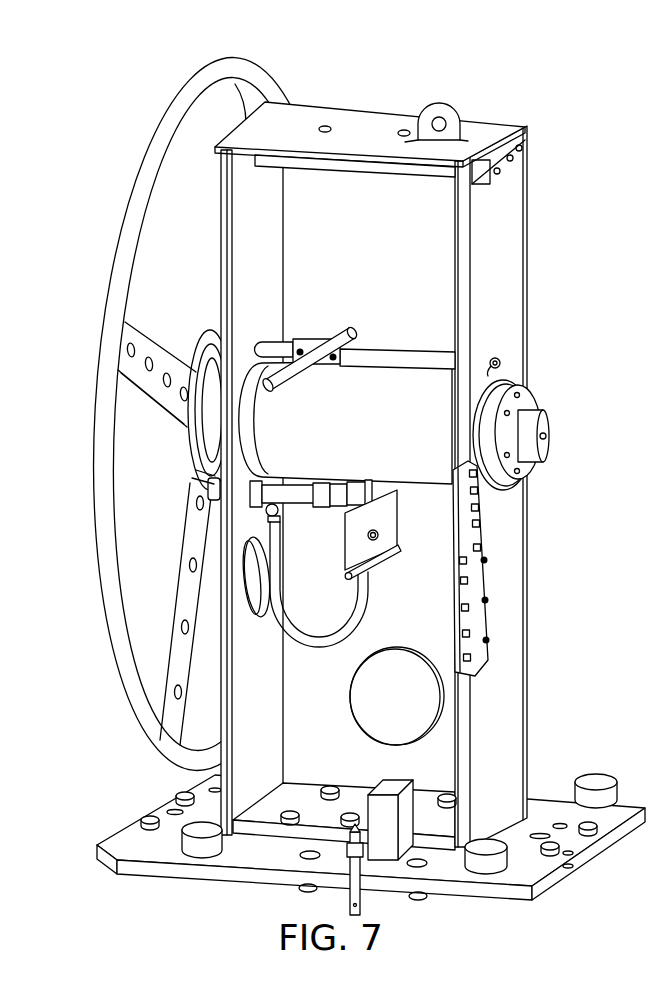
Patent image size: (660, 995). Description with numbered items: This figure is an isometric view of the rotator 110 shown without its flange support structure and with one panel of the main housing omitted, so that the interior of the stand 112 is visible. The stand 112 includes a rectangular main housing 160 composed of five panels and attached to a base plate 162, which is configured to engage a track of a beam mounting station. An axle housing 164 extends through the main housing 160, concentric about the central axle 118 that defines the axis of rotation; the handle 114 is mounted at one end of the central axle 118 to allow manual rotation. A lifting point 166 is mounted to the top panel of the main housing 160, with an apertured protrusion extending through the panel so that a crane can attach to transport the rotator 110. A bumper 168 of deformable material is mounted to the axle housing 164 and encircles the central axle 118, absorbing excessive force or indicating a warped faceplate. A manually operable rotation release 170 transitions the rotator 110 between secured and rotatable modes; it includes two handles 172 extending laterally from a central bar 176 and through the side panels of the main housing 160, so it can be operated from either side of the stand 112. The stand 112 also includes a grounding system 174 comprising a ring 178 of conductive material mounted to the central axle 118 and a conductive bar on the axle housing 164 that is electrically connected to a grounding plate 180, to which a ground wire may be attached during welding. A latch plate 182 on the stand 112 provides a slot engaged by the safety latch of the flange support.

The rotator 110 is at (116, 157).
The stand 112 is at (524, 196).
The handle 114 is at (200, 83).
The central axle 118 is at (548, 438).
The main housing 160 is at (525, 710).
The base plate 162 is at (125, 835).
The axle housing 164 is at (397, 397).
The lifting point 166 is at (450, 108).
The bumper 168 is at (532, 404).
The rotation release 170 is at (314, 330).
The handles 172 is at (272, 395).
The grounding system 174 is at (230, 517).
The central bar 176 is at (500, 364).
The ring 178 is at (190, 468).
The grounding plate 180 is at (385, 548).
The latch plate 182 is at (488, 625).